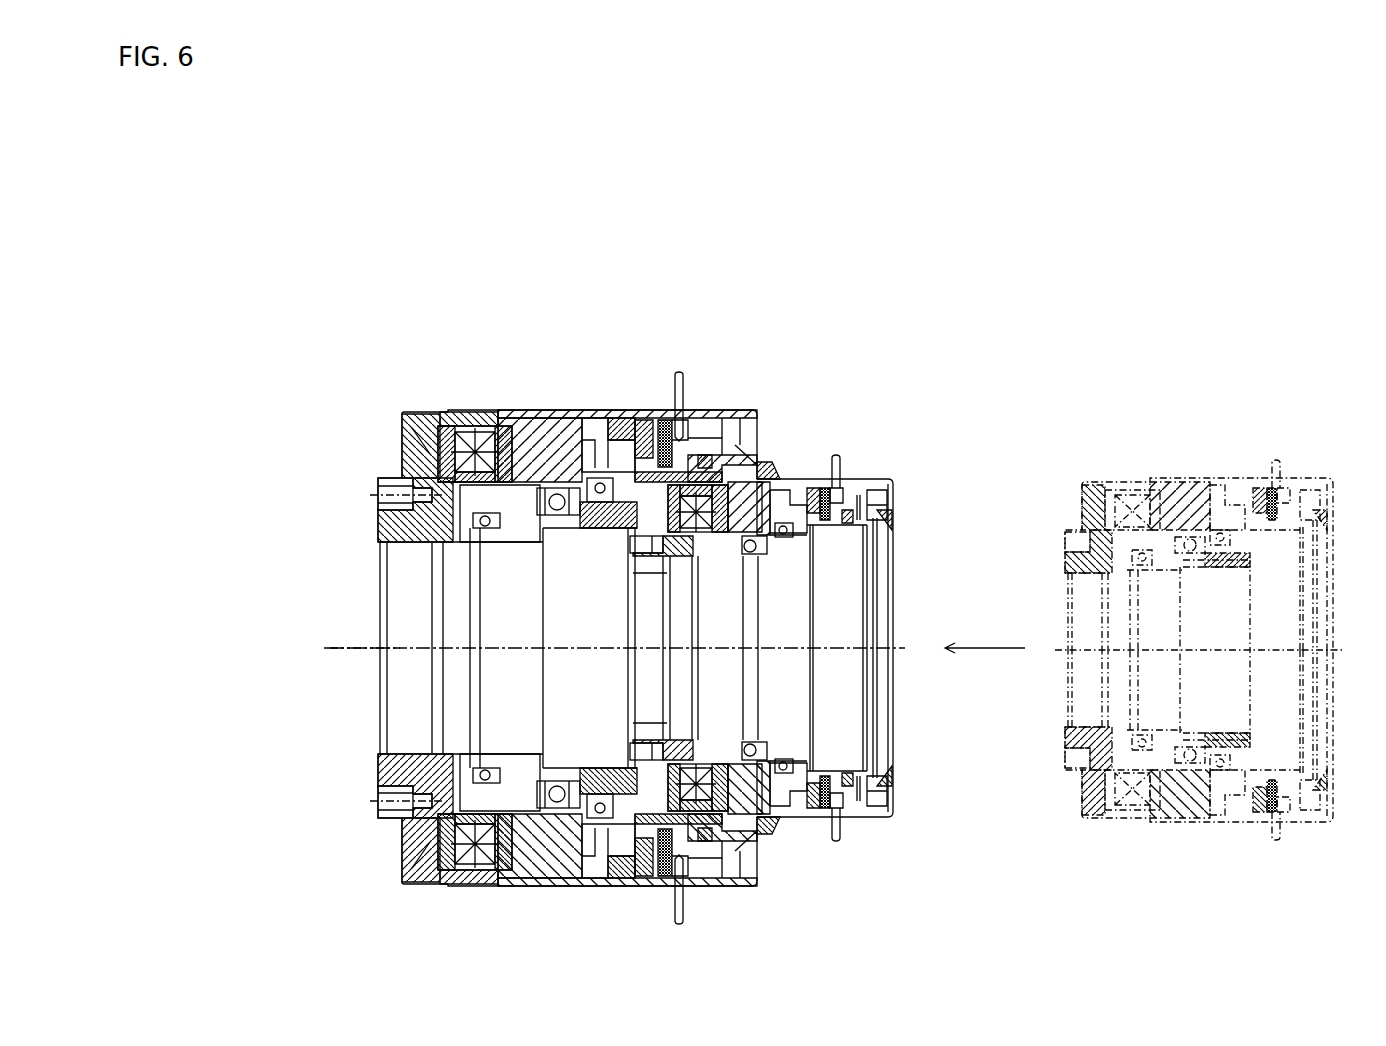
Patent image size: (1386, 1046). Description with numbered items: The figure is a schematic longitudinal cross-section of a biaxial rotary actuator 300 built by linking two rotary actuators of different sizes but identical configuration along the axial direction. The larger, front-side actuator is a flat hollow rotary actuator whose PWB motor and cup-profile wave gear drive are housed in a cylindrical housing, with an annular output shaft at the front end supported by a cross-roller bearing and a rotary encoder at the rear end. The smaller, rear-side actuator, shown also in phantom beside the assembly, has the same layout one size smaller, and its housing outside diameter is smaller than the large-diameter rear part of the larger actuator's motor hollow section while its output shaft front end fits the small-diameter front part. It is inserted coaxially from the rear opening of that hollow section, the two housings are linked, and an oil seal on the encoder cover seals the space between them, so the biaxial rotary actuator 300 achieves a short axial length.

The biaxial rotary actuator 300 is at (661, 238).